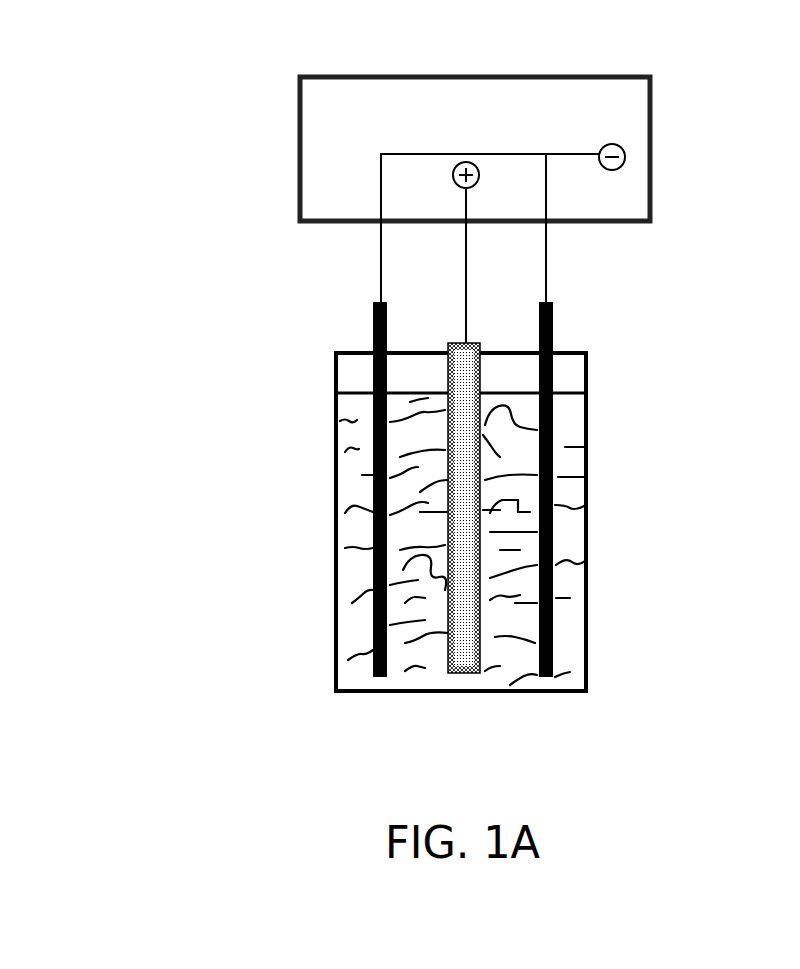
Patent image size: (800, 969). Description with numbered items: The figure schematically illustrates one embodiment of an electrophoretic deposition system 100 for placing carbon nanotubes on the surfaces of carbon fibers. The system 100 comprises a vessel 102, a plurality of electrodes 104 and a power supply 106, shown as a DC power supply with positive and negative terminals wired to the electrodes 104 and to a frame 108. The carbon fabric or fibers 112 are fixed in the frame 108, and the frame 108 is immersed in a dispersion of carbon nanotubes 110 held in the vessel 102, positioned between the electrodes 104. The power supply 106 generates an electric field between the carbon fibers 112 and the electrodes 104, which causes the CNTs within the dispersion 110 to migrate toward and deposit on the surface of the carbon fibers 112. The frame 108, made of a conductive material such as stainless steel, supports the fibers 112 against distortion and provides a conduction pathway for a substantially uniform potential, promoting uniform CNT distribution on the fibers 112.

The electrophoretic deposition system 100 is at (175, 138).
The vessel 102 is at (337, 578).
The electrodes 104 is at (377, 657).
The power supply 106 is at (652, 133).
The frame 108 is at (472, 676).
The dispersion of carbon nanotubes 110 is at (560, 496).
The carbon fabric or fibers 112 is at (442, 369).